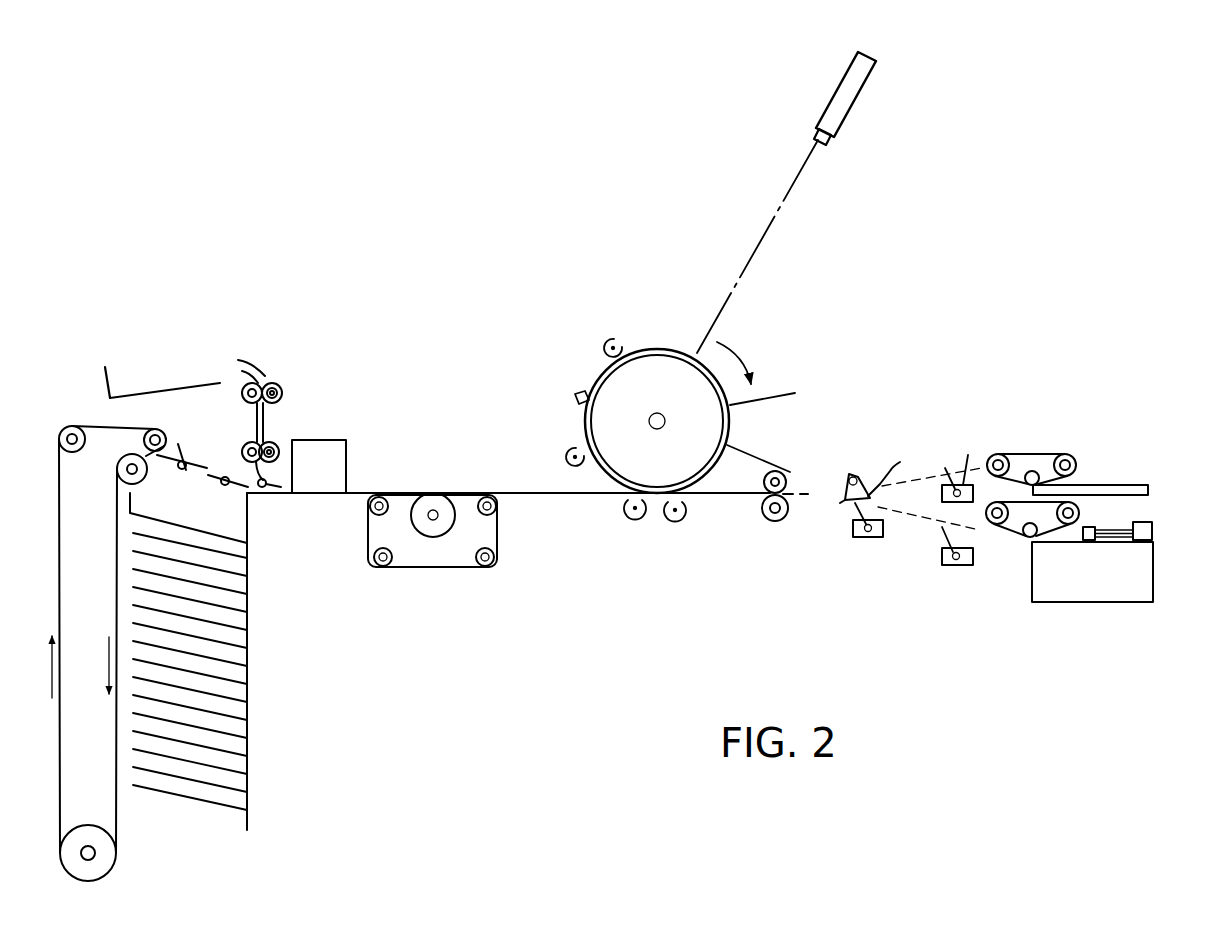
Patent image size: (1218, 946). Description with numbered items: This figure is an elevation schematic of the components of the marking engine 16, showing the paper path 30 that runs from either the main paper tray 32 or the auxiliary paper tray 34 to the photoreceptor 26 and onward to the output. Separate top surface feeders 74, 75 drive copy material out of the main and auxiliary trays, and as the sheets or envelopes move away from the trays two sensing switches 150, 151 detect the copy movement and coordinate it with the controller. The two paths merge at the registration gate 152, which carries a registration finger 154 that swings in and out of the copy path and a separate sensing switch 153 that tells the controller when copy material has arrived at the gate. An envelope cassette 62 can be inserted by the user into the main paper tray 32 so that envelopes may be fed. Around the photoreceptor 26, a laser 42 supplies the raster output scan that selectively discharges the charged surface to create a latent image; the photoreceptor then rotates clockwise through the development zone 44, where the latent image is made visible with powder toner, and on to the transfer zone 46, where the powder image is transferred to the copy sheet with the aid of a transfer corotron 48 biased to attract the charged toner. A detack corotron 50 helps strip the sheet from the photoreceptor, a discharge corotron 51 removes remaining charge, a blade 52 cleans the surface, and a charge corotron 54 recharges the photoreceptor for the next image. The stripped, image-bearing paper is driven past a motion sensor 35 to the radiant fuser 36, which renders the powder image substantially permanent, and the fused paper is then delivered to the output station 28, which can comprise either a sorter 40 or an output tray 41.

The marking engine 16 is at (596, 622).
The photoreceptor 26 is at (677, 349).
The output station 28 is at (216, 446).
The paper path 30 is at (577, 497).
The main paper tray 32 is at (1137, 592).
The auxiliary paper tray 34 is at (1118, 483).
The motion sensor 35 is at (440, 494).
The radiant fuser 36 is at (337, 440).
The sorter 40 is at (247, 773).
The output tray 41 is at (162, 388).
The laser 42 is at (838, 122).
The development zone 44 is at (797, 397).
The transfer zone 46 is at (667, 527).
The transfer corotron 48 is at (683, 520).
The detack corotron 50 is at (637, 520).
The discharge corotron 51 is at (572, 448).
The blade 52 is at (576, 397).
The charge corotron 54 is at (615, 339).
The envelope cassette 62 is at (1153, 533).
The top surface feeder 74 is at (1003, 533).
The top surface feeder 75 is at (1034, 454).
The sensing switch 150 is at (963, 568).
The sensing switch 151 is at (964, 467).
The registration gate 152 is at (893, 441).
The sensing switch 153 is at (877, 538).
The registration finger 154 is at (925, 484).